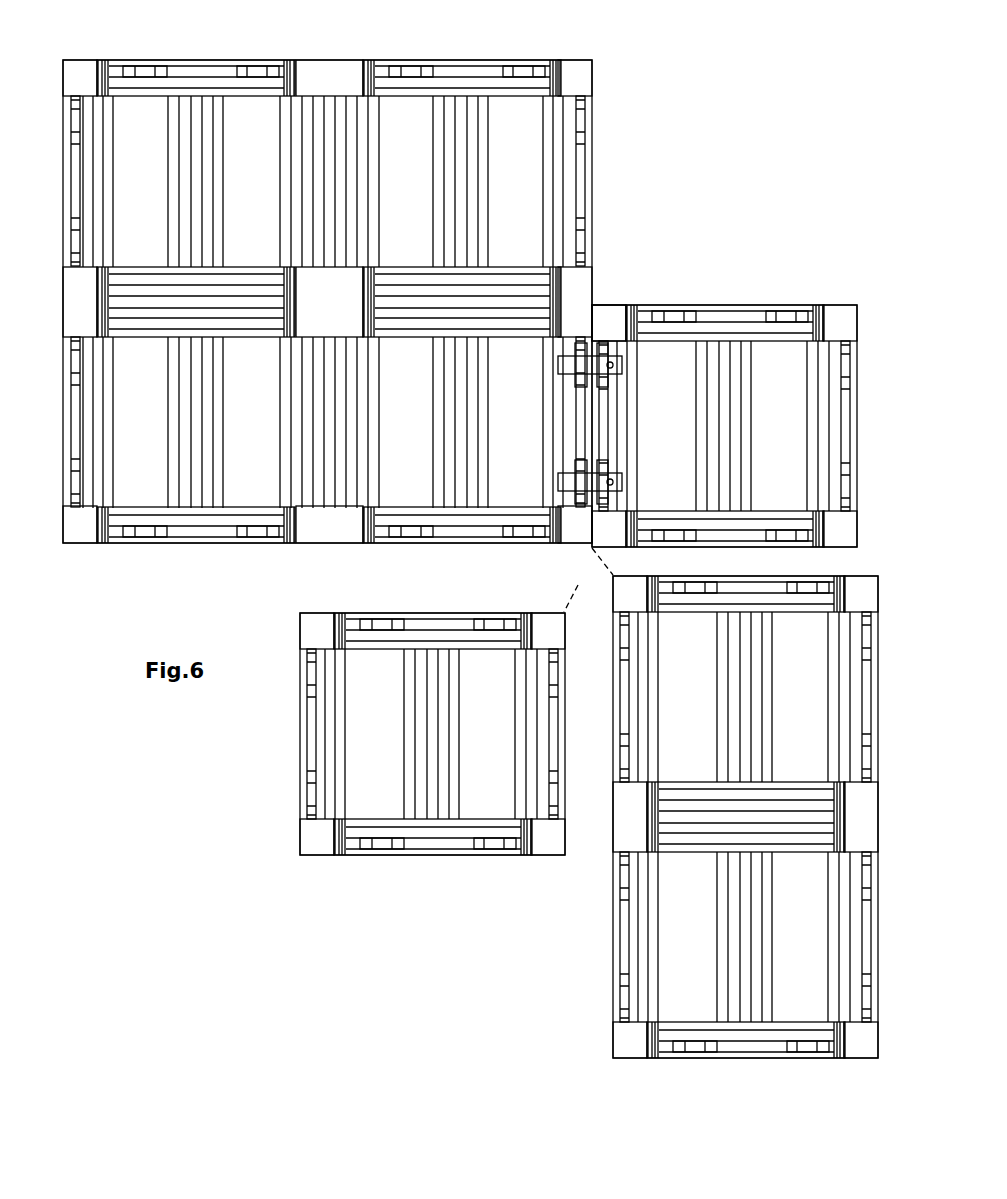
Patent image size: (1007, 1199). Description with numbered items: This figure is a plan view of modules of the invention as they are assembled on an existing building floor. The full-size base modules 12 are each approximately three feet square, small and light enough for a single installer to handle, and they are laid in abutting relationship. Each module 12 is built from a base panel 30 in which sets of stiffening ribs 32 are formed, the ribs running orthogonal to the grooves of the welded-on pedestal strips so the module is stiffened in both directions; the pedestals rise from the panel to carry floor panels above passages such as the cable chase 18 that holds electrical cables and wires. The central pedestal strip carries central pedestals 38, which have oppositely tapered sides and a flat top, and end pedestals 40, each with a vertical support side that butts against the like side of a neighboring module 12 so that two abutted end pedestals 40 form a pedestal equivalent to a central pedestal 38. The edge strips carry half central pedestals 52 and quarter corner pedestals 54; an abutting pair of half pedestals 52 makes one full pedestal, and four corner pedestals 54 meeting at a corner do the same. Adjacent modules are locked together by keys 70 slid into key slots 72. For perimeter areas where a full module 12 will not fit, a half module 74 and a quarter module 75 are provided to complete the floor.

The base module 12 is at (359, 300).
The cable chase 18 is at (332, 283).
The base panel 30 is at (580, 165).
The stiffening ribs 32 is at (483, 135).
The central pedestal 38 is at (343, 320).
The end pedestal 40 is at (594, 285).
The half central pedestal 52 is at (338, 58).
The quarter corner pedestal 54 is at (608, 303).
The key 70 is at (618, 366).
The key slot 72 is at (73, 118).
The half module 74 is at (886, 705).
The quarter module 75 is at (872, 447).